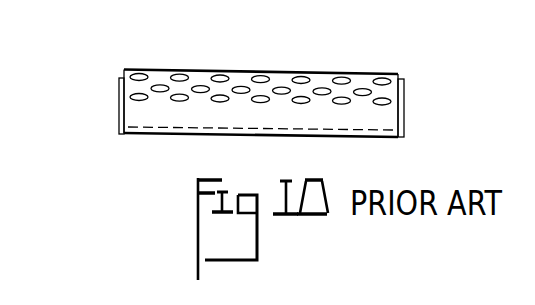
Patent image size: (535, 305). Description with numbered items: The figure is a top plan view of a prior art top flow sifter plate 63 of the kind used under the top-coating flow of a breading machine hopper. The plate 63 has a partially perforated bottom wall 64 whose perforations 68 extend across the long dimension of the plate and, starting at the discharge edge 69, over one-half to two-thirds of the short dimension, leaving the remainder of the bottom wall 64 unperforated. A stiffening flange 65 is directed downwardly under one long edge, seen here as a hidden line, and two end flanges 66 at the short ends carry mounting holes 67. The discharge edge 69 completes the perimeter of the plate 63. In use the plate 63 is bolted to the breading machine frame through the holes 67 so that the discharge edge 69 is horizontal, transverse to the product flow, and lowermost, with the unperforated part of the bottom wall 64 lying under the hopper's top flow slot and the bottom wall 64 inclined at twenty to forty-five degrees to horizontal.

The top flow sifter plate 63 is at (407, 118).
The partially perforated bottom wall 64 is at (200, 81).
The stiffening flange 65 is at (155, 134).
The end flanges 66 is at (119, 90).
The mounting holes 67 is at (118, 108).
The perforations 68 is at (303, 78).
The discharge edge 69 is at (337, 73).